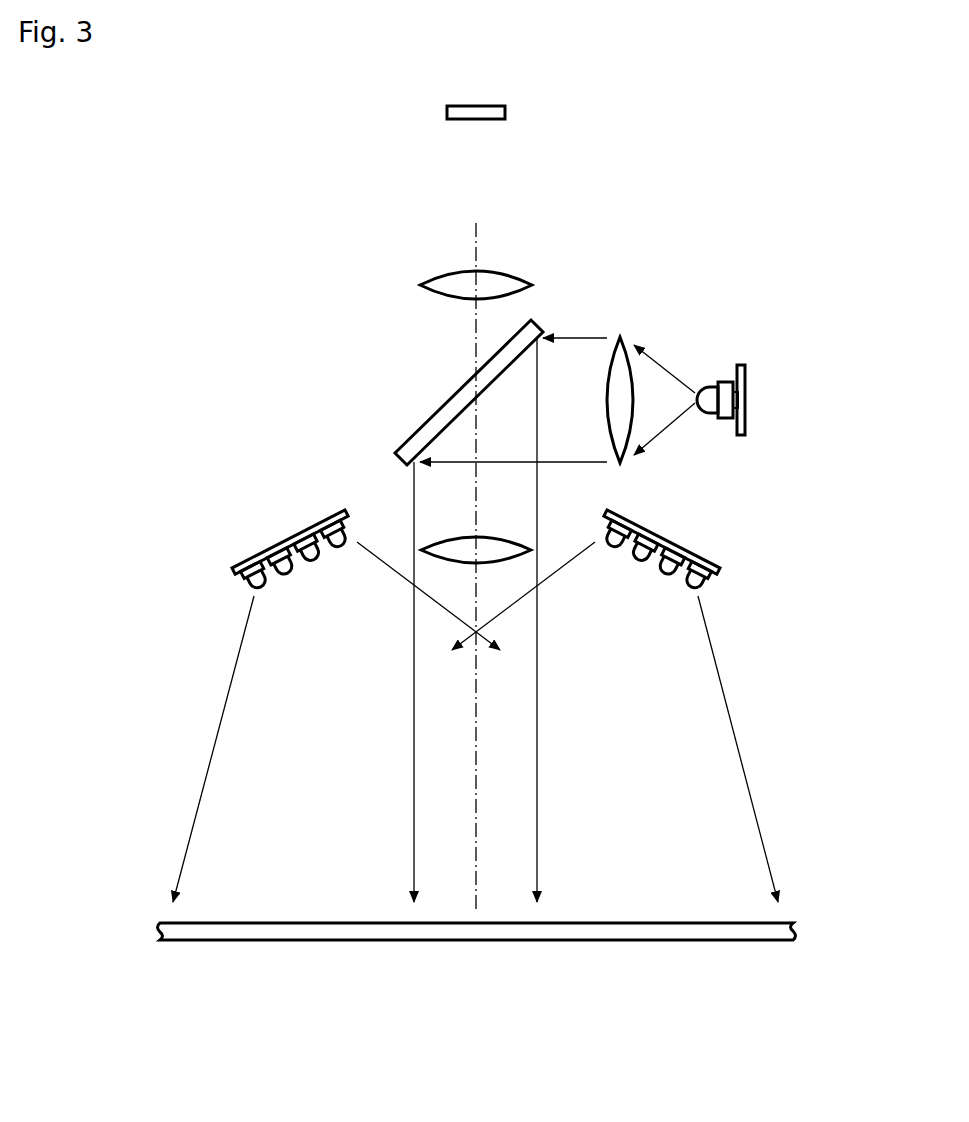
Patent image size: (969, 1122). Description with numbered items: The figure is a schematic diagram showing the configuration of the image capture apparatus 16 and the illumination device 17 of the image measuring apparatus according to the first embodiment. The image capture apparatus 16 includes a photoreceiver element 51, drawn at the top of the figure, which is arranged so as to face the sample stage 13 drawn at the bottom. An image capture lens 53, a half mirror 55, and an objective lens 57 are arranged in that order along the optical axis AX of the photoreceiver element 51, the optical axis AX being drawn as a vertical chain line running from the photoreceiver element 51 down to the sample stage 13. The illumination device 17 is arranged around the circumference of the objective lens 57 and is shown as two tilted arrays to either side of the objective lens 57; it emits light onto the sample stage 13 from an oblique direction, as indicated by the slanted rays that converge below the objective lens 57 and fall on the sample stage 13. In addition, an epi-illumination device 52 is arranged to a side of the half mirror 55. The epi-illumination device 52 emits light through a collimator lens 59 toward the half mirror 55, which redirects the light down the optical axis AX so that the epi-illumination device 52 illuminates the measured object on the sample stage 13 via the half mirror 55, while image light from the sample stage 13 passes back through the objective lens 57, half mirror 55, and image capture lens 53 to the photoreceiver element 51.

The sample stage 13 is at (780, 922).
The image capture apparatus 16 is at (370, 222).
The illumination device 17 is at (281, 543).
The photoreceiver element 51 is at (447, 113).
The epi-illumination device 52 is at (745, 390).
The image capture lens 53 is at (420, 287).
The half mirror 55 is at (535, 322).
The objective lens 57 is at (500, 537).
The collimator lens 59 is at (622, 337).
The optical axis AX is at (478, 781).